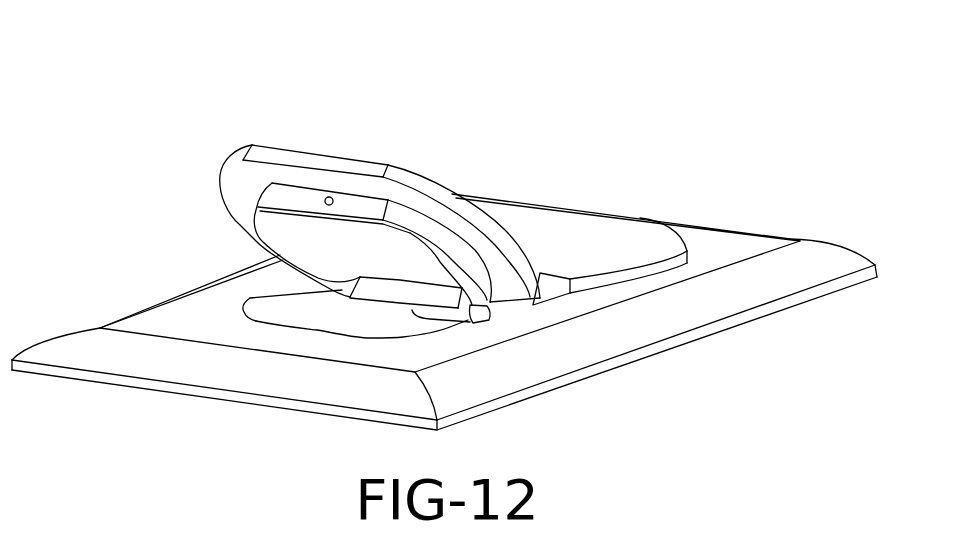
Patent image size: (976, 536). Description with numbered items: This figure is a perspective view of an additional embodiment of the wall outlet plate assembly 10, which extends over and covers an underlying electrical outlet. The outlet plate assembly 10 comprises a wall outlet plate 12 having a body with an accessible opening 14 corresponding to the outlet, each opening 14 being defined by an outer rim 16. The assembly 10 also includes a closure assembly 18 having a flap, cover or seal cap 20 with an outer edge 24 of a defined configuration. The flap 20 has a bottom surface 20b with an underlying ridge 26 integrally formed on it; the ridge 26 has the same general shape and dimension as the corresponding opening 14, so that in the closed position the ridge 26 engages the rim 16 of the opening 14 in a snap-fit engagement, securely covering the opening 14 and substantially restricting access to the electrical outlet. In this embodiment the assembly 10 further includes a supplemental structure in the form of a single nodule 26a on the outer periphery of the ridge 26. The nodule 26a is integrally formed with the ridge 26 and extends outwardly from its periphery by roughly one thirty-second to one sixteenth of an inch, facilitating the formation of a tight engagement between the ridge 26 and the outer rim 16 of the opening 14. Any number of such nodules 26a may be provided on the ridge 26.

The outlet plate assembly 10 is at (713, 124).
The wall outlet plate 12 is at (680, 320).
The opening 14 is at (343, 318).
The outer rim 16 is at (262, 312).
The closure assembly 18 is at (567, 211).
The flap 20 is at (247, 143).
The bottom surface 20b is at (310, 222).
The outer edge 24 is at (303, 157).
The ridge 26 is at (285, 195).
The nodule 26a is at (334, 198).